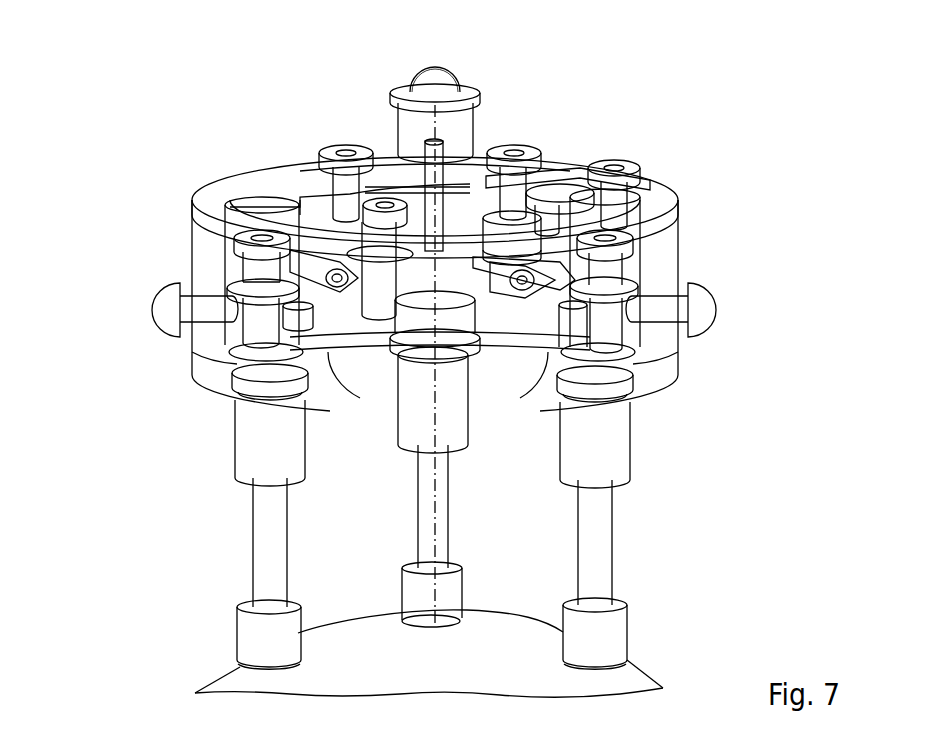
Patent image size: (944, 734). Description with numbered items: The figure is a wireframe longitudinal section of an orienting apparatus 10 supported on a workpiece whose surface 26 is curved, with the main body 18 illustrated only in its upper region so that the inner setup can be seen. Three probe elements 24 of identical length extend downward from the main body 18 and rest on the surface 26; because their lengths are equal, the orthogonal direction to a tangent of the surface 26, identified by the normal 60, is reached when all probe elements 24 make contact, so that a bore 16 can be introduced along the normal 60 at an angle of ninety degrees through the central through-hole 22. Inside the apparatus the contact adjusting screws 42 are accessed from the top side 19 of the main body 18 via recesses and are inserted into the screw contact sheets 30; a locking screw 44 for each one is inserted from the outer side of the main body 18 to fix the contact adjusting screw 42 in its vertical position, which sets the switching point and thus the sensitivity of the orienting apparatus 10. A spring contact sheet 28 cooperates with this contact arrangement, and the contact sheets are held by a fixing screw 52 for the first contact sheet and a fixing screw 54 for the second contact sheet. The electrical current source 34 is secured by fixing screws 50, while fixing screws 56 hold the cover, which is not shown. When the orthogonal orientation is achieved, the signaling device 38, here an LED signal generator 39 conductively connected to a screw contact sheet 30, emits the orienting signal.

The orienting apparatus 10 is at (755, 202).
The bore 16 is at (413, 620).
The main body 18 is at (207, 383).
The top side of the main body 19 is at (237, 187).
The through-hole 22 is at (375, 367).
The probe elements 24 is at (278, 552).
The surface of the workpiece 26 is at (510, 633).
The spring contact sheet 28 is at (243, 373).
The screw contact sheet 30 is at (226, 283).
The electrical current source 34 is at (523, 259).
The signaling device 38 is at (432, 76).
The LED signal generator 39 is at (435, 80).
The contact adjusting screw 42 is at (352, 225).
The locking screw 44 is at (162, 308).
The fixing screw for battery 50 is at (549, 170).
The fixing screw for first contact sheet 52 is at (323, 362).
The fixing screw for second contact sheet 54 is at (240, 263).
The fixing screw for cover of the main body 56 is at (346, 149).
The normal to the surface of the workpiece 60 is at (426, 510).